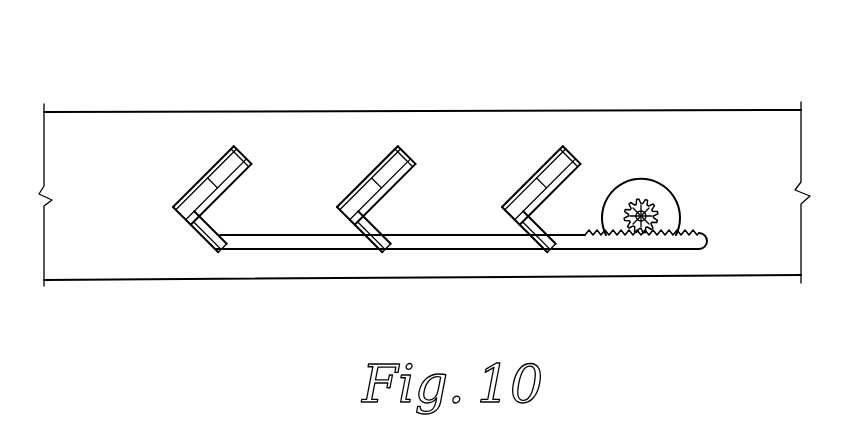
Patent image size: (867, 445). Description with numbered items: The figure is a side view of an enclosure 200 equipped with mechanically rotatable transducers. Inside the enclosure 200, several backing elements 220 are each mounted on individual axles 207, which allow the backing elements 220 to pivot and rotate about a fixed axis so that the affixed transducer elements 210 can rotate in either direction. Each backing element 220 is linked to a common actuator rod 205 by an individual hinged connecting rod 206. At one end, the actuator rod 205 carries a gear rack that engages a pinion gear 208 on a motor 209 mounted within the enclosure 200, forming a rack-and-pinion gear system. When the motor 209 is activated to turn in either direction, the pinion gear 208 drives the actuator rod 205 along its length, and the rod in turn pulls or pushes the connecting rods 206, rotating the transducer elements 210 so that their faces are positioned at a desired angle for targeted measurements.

The enclosure 200 is at (676, 60).
The actuator rod 205 is at (428, 233).
The hinged connecting rods 206 is at (206, 226).
The axles 207 is at (372, 186).
The pinion gear 208 is at (640, 200).
The motor 209 is at (678, 193).
The transducer elements 210 is at (212, 189).
The backing elements 220 is at (248, 160).